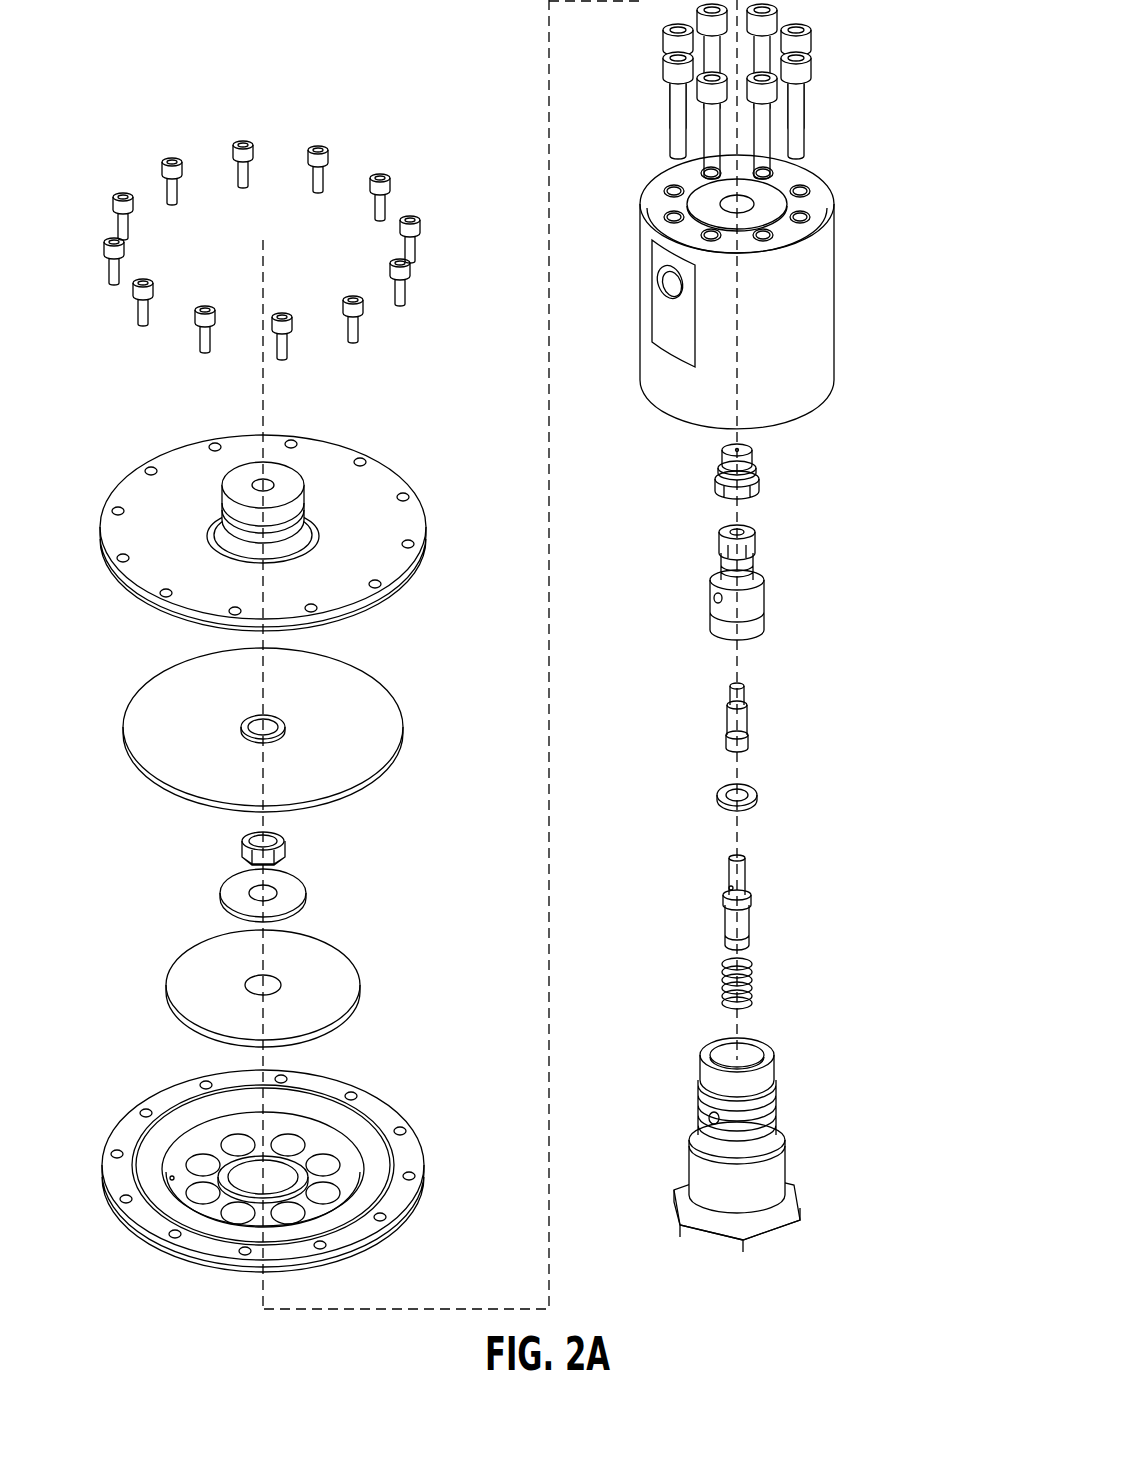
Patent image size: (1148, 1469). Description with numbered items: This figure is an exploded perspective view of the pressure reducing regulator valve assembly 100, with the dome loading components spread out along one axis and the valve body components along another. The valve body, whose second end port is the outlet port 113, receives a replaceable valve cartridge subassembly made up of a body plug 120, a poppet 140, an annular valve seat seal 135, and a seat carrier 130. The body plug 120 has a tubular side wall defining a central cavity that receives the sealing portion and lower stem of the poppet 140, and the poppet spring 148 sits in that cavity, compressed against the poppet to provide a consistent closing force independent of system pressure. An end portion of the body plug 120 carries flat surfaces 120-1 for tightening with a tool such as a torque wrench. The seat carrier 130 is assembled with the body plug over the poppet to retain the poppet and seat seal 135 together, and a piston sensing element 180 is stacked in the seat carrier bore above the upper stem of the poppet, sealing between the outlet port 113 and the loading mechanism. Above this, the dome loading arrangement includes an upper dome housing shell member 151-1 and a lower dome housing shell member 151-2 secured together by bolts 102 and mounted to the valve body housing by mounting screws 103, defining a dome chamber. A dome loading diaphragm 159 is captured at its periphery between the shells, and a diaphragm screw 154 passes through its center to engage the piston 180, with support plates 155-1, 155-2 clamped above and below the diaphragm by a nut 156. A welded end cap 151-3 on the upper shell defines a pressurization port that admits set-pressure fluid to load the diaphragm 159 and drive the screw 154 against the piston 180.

The pressure reducing regulator valve assembly 100 is at (81, 178).
The bolts 102 is at (320, 148).
The mounting screws 103 is at (812, 70).
The outlet port 113 is at (663, 272).
The body plug 120 is at (768, 1179).
The flat surfaces 120-1 is at (778, 1228).
The seat carrier 130 is at (757, 592).
The annular valve seat seal 135 is at (758, 795).
The poppet 140 is at (747, 915).
The poppet spring 148 is at (752, 973).
The upper dome housing shell member 151-1 is at (294, 503).
The lower dome housing shell member 151-2 is at (387, 1113).
The welded end cap 151-3 is at (287, 480).
The diaphragm screw 154 is at (755, 465).
The upper support plate 155-1 is at (295, 893).
The lower support plate 155-2 is at (340, 975).
The nut 156 is at (290, 840).
The dome loading diaphragm 159 is at (365, 705).
The piston sensing element 180 is at (748, 692).